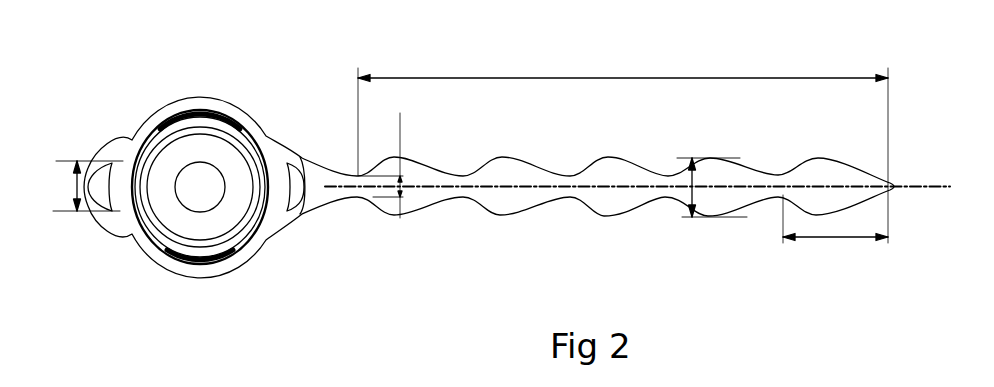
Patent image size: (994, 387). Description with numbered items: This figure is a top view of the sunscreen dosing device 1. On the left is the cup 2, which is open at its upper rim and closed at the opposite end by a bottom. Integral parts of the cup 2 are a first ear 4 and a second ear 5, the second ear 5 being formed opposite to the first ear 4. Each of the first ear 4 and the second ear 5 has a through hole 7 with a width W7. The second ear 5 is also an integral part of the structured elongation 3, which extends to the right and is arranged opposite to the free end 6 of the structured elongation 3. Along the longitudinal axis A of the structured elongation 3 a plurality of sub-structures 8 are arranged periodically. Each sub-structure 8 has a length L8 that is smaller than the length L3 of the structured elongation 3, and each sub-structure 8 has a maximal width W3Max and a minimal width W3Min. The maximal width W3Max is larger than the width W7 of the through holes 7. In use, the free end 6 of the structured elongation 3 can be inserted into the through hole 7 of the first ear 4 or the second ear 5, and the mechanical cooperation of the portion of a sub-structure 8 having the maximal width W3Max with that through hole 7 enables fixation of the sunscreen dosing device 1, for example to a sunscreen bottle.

The sunscreen dosing device 1 is at (452, 226).
The cup 2 is at (203, 105).
The structured elongation 3 is at (600, 215).
The first ear 4 is at (93, 147).
The second ear 5 is at (305, 150).
The free end 6 is at (909, 187).
The through hole 7 is at (104, 190).
The sub-structure 8 is at (423, 152).
The longitudinal axis A is at (509, 188).
The length of the structured elongation L3 is at (519, 77).
The length of the sub-structure L8 is at (835, 239).
The width of the through hole W7 is at (77, 183).
The minimal width of the sub-structure W3Min is at (399, 188).
The maximal width of the sub-structure W3Max is at (692, 187).